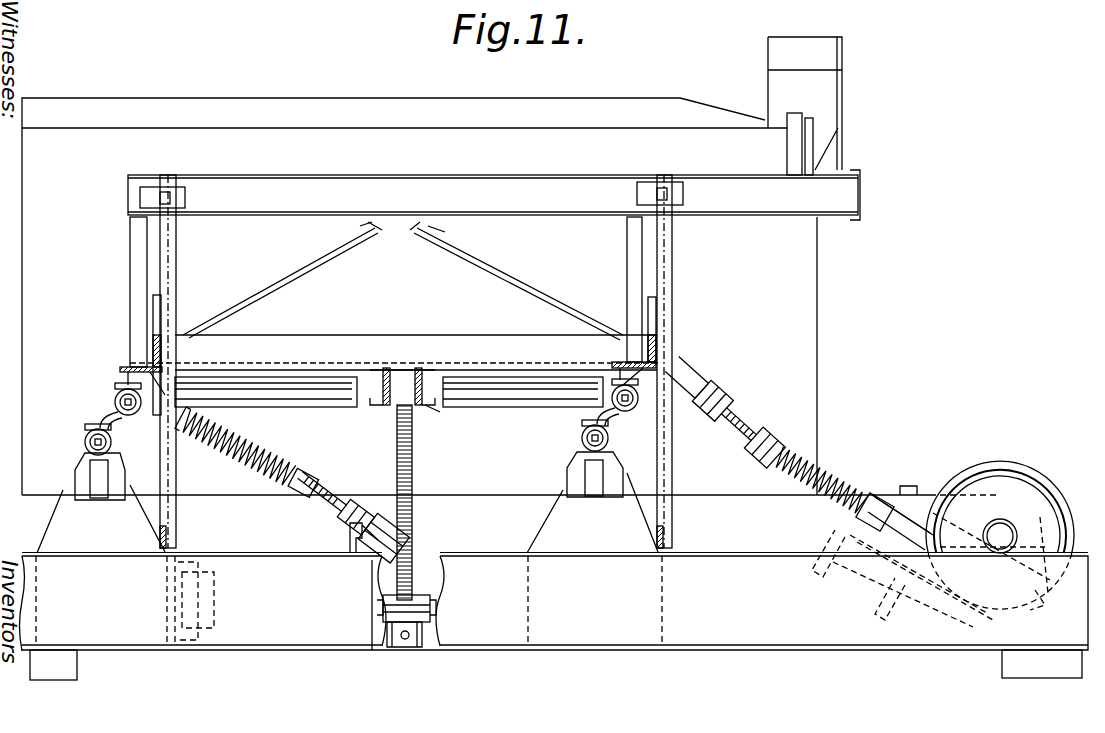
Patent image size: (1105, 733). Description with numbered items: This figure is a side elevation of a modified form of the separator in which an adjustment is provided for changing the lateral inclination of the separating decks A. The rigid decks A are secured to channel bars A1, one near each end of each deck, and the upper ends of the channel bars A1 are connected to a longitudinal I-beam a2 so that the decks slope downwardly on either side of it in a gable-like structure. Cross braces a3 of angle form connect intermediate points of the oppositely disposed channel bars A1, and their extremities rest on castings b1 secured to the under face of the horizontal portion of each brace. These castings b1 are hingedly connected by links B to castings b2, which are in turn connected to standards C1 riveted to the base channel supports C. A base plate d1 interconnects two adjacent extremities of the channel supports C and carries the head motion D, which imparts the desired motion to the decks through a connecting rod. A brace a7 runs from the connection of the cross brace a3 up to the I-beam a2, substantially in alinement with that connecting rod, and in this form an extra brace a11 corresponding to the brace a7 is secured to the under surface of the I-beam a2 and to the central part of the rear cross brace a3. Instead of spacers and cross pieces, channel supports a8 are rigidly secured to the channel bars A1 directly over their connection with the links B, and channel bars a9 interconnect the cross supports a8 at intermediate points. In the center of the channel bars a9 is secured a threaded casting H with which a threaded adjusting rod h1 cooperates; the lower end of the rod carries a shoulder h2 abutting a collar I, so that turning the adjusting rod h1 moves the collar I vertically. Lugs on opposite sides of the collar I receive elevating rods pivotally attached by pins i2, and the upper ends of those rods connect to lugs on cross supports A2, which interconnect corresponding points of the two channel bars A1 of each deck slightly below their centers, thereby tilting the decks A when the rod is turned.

The separating deck A is at (448, 266).
The channel bar A1 is at (670, 306).
The cross support A2 is at (303, 410).
The longitudinal I-beam a2 is at (494, 195).
The cross brace a3 is at (130, 366).
The brace a7 is at (552, 305).
The channel support a8 is at (395, 354).
The channel bar a9 is at (436, 408).
The extra brace a11 is at (252, 300).
The link B is at (108, 398).
The casting b1 is at (648, 368).
The casting b2 is at (76, 466).
The base channel support C is at (554, 617).
The standard C1 is at (354, 530).
The head motion D is at (973, 535).
The base plate d1 is at (830, 533).
The threaded casting H is at (413, 378).
The threaded adjusting rod h1 is at (413, 470).
The shoulder h2 is at (412, 648).
The collar I is at (361, 586).
The pin i2 is at (412, 600).